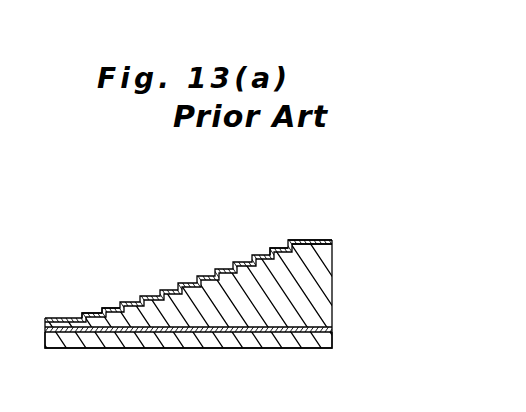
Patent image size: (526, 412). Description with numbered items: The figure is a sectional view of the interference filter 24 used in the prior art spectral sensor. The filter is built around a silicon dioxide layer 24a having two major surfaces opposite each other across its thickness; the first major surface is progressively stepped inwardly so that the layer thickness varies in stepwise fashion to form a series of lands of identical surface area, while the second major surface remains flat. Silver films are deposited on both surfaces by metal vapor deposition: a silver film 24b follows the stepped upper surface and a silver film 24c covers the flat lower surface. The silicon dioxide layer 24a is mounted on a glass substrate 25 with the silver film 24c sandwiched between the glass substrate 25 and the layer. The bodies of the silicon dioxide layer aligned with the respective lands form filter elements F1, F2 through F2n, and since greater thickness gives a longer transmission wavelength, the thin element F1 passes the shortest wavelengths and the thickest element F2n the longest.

The interference filter 24 is at (67, 308).
The silicon dioxide layer 24a is at (312, 275).
The silver film 24b is at (315, 240).
The silver film 24c is at (313, 327).
The glass substrate 25 is at (310, 340).
The filter element F1 is at (90, 310).
The filter element F2 is at (112, 306).
The filter element F2n is at (280, 247).